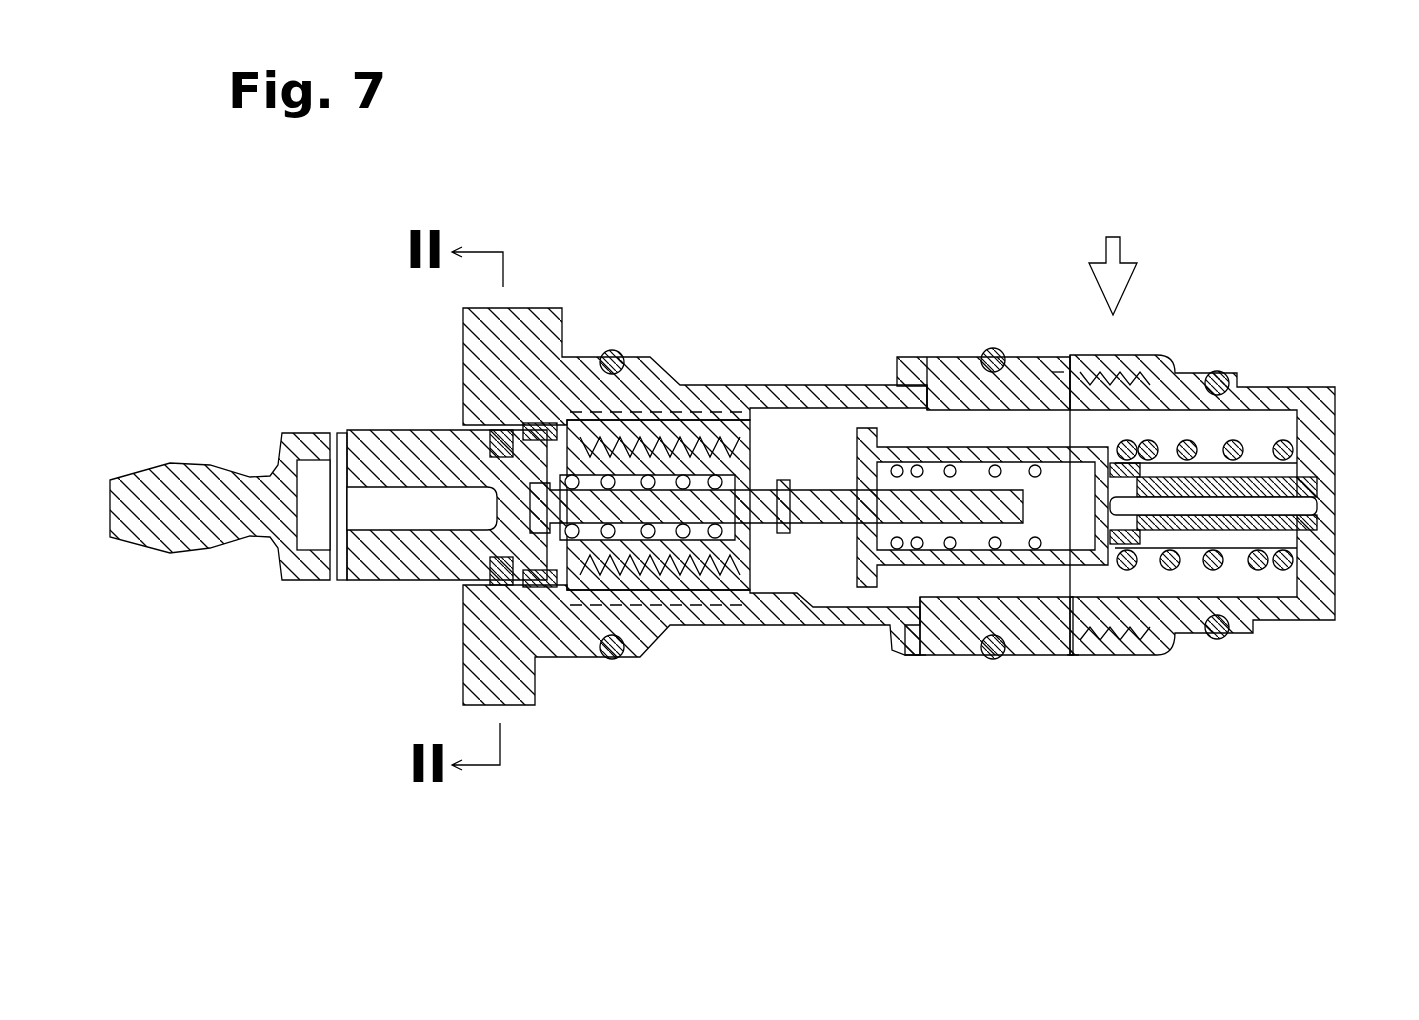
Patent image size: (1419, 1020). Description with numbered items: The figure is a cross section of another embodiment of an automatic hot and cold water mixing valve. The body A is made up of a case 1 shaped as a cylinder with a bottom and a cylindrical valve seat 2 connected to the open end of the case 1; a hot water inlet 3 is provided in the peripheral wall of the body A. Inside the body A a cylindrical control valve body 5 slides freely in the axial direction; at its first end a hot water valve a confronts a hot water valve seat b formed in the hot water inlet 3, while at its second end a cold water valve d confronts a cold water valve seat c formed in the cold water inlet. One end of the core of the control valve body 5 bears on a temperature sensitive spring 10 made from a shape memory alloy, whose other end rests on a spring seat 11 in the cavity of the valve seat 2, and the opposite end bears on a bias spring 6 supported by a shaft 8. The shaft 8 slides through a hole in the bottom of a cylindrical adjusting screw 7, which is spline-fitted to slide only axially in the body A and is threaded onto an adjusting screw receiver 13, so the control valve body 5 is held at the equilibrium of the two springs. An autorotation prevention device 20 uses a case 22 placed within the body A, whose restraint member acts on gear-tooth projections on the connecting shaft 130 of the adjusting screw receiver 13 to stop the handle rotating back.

The case 1 is at (833, 613).
The valve seat 2 is at (1277, 613).
The hot water inlet 3 is at (945, 655).
The control valve body 5 is at (1012, 655).
The bias spring 6 is at (1060, 468).
The adjusting screw 7 is at (710, 580).
The shaft 8 is at (822, 505).
The temperature sensitive spring 10 is at (1234, 447).
The spring seat 11 is at (1312, 460).
The adjusting screw receiver 13 is at (561, 458).
The autorotation prevention device 20 is at (467, 600).
The case 22 is at (465, 597).
The connecting shaft 130 is at (412, 463).
The hot water valve a is at (920, 655).
The hot water valve seat b is at (933, 400).
The cold water valve seat c is at (1073, 655).
The cold water valve d is at (1058, 370).
The body A is at (1113, 246).